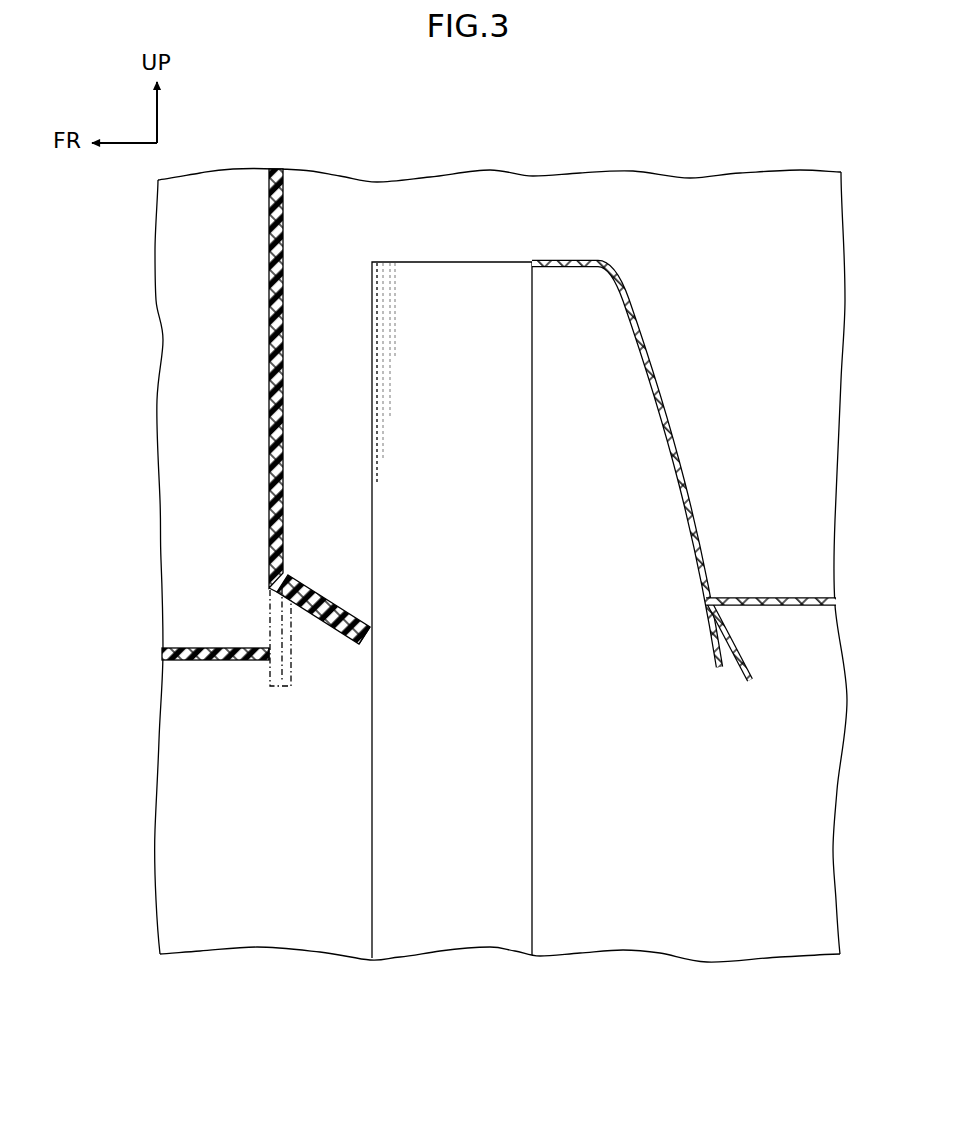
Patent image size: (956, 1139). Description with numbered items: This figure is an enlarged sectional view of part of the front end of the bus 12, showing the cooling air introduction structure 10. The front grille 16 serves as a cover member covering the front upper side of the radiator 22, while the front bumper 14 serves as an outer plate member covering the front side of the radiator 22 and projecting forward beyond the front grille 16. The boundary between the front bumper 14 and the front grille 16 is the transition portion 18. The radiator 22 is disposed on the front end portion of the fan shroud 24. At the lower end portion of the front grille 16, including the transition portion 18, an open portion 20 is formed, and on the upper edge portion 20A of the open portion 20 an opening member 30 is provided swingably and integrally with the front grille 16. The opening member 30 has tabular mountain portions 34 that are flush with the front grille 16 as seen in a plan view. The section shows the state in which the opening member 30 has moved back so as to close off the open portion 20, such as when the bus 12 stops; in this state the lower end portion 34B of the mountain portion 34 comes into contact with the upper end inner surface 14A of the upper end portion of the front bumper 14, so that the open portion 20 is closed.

The cooling air introduction structure 10 is at (460, 519).
The bus 12 is at (642, 157).
The front bumper 14 is at (187, 658).
The upper end inner surface 14A is at (272, 662).
The front grille 16 is at (269, 348).
The transition portion 18 is at (264, 641).
The open portion 20 is at (262, 617).
The upper edge portion 20A is at (270, 588).
The radiator 22 is at (532, 735).
The fan shroud 24 is at (677, 425).
The opening member 30 is at (323, 681).
The mountain portion 34 is at (343, 636).
The lower end portion 34B is at (359, 645).